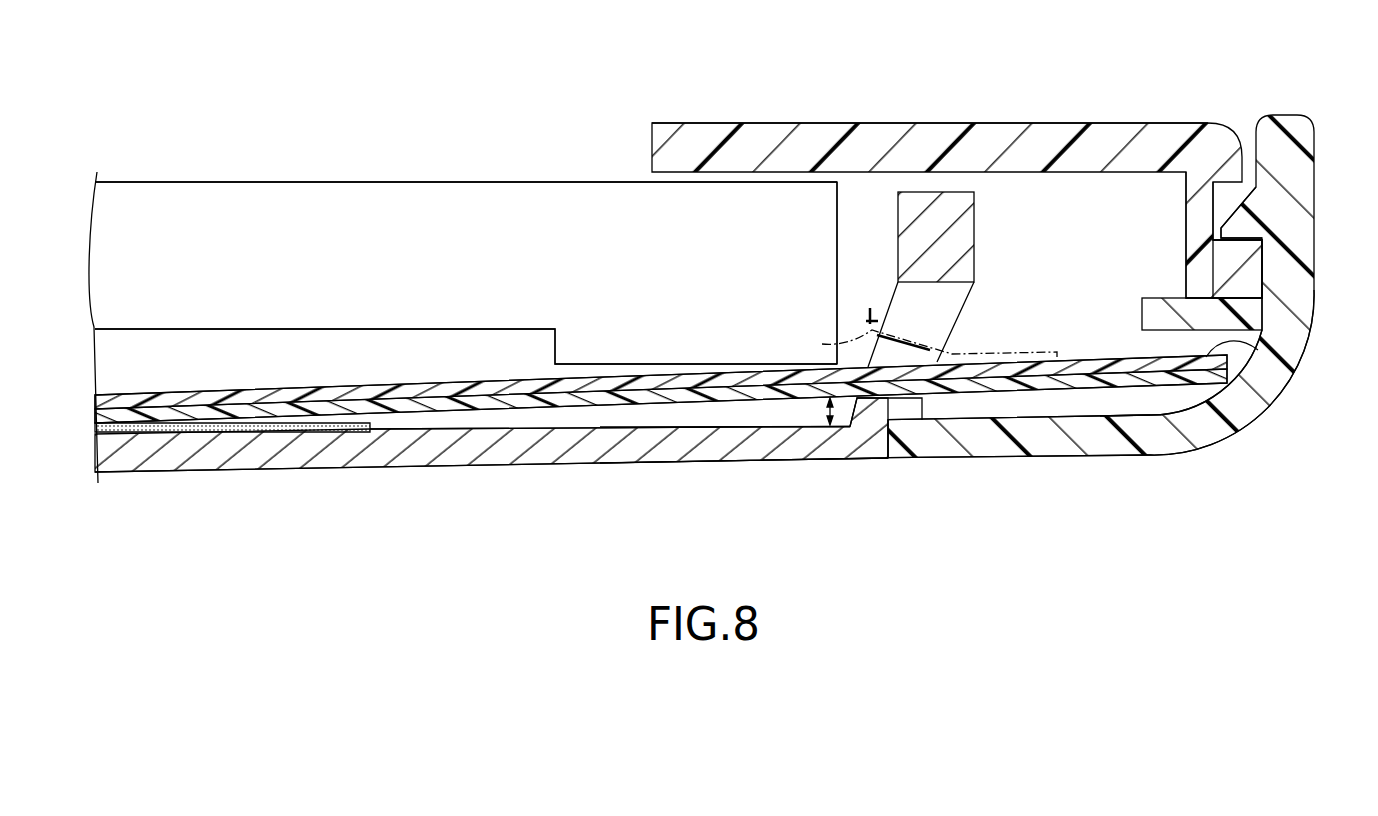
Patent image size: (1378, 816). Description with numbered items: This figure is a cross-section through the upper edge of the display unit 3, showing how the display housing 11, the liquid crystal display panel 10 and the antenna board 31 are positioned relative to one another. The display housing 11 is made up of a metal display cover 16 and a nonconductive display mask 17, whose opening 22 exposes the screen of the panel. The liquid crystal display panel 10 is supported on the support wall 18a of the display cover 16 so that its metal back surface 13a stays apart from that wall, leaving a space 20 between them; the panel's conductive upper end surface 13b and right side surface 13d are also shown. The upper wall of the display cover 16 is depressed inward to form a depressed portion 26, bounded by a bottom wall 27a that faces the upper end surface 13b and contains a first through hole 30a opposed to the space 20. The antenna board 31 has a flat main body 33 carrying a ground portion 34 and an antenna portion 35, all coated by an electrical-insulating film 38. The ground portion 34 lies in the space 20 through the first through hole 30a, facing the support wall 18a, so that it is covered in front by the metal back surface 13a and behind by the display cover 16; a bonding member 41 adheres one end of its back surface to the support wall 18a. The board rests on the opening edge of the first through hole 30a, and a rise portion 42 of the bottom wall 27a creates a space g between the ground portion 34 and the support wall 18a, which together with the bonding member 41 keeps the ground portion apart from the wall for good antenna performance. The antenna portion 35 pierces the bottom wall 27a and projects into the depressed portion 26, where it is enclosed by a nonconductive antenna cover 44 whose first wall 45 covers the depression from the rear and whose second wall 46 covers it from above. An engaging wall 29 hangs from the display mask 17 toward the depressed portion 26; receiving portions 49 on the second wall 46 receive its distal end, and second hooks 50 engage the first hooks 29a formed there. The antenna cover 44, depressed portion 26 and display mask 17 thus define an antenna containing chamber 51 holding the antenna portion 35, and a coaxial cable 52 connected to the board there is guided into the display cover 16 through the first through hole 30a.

The display unit 3 is at (1262, 97).
The liquid crystal display panel 10 is at (305, 182).
The display housing 11 is at (415, 468).
The back surface 13a is at (293, 330).
The upper end surface 13b is at (845, 218).
The right side surface 13d is at (198, 197).
The display cover 16 is at (755, 447).
The display mask 17 is at (962, 132).
The support wall 18a is at (506, 452).
The space 20 is at (107, 360).
The opening 22 is at (652, 148).
The depressed portion 26 is at (966, 303).
The bottom wall 27a is at (958, 236).
The engaging wall 29 is at (1197, 216).
The first hooks 29a is at (1228, 265).
The first through hole 30a is at (905, 305).
The antenna board 31 is at (605, 368).
The main body 33 is at (415, 395).
The ground portion 34 is at (184, 407).
The antenna portion 35 is at (1262, 348).
The electrical-insulating film 38 is at (640, 405).
The bonding member 41 is at (290, 428).
The rise portion 42 is at (907, 404).
The antenna cover 44 is at (1268, 405).
The first wall 45 is at (1076, 456).
The second wall 46 is at (1300, 158).
The receiving portions 49 is at (1142, 316).
The second hooks 50 is at (1243, 227).
The antenna containing chamber 51 is at (1137, 408).
The coaxial cable 52 is at (925, 345).
The space g is at (833, 425).